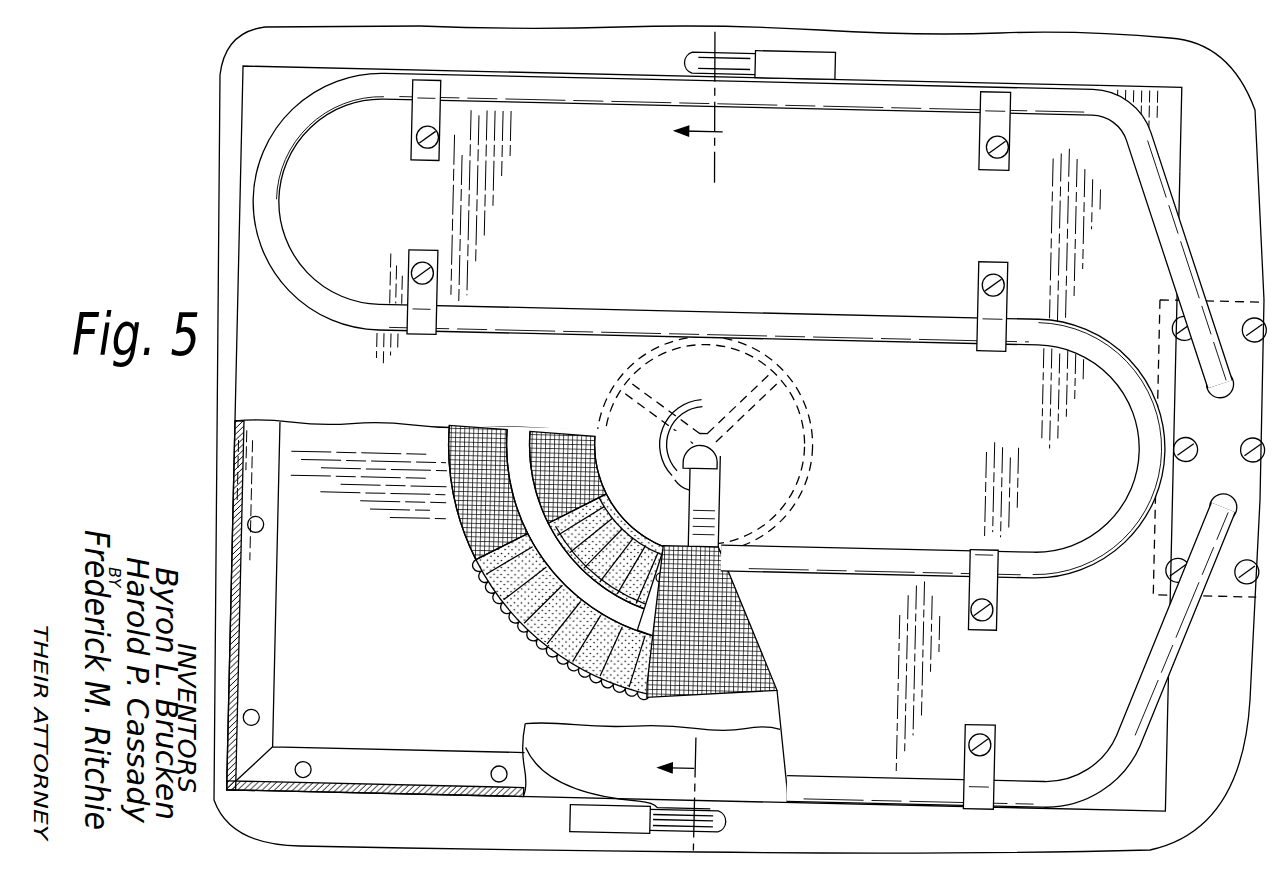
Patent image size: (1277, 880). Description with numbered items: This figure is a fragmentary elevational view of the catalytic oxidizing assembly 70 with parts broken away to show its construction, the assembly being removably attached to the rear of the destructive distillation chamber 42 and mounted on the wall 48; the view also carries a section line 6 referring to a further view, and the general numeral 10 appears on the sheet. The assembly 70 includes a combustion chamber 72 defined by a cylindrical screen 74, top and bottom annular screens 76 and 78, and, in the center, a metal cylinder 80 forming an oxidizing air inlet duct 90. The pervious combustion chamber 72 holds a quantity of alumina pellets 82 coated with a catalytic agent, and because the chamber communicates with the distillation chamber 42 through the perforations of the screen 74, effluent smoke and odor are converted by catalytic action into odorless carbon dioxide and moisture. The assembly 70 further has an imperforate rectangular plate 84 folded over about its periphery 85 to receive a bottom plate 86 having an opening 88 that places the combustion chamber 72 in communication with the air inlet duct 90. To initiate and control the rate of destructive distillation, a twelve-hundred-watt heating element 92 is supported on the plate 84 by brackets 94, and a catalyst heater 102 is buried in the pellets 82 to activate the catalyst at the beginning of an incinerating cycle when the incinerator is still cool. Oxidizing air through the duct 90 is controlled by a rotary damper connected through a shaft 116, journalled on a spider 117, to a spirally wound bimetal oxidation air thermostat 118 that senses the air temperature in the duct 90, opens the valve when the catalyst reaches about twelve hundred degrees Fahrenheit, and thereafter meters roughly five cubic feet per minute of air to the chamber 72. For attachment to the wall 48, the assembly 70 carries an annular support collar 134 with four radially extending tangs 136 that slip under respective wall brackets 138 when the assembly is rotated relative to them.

The section line 6- 6 is at (705, 441).
The refrigerator door assembly 10 is at (218, 93).
The destructive distillation chamber 42 is at (1238, 199).
The wall 48 is at (225, 170).
The catalytic oxidizing assembly 70 is at (241, 213).
The combustion chamber 72 is at (638, 563).
The cylindrical screen 74 is at (522, 611).
The top annular screen 76 is at (764, 652).
The bottom annular screen 78 is at (457, 447).
The metal cylinder 80 is at (609, 453).
The alumina pellets 82 is at (558, 613).
The rectangular plate 84 is at (250, 385).
The periphery 85 is at (1165, 66).
The bottom plate 86 is at (320, 438).
The opening 88 is at (458, 490).
The oxidizing air inlet duct 90 is at (656, 488).
The heating element 92 is at (898, 301).
The brackets 94 is at (988, 616).
The catalyst heater 102 is at (516, 421).
The shaft 116 is at (722, 451).
The spider 117 is at (717, 492).
The oxidation air thermostat 118 is at (689, 467).
The annular support collar 134 is at (616, 760).
The tangs 136 is at (729, 789).
The wall brackets 138 is at (680, 49).